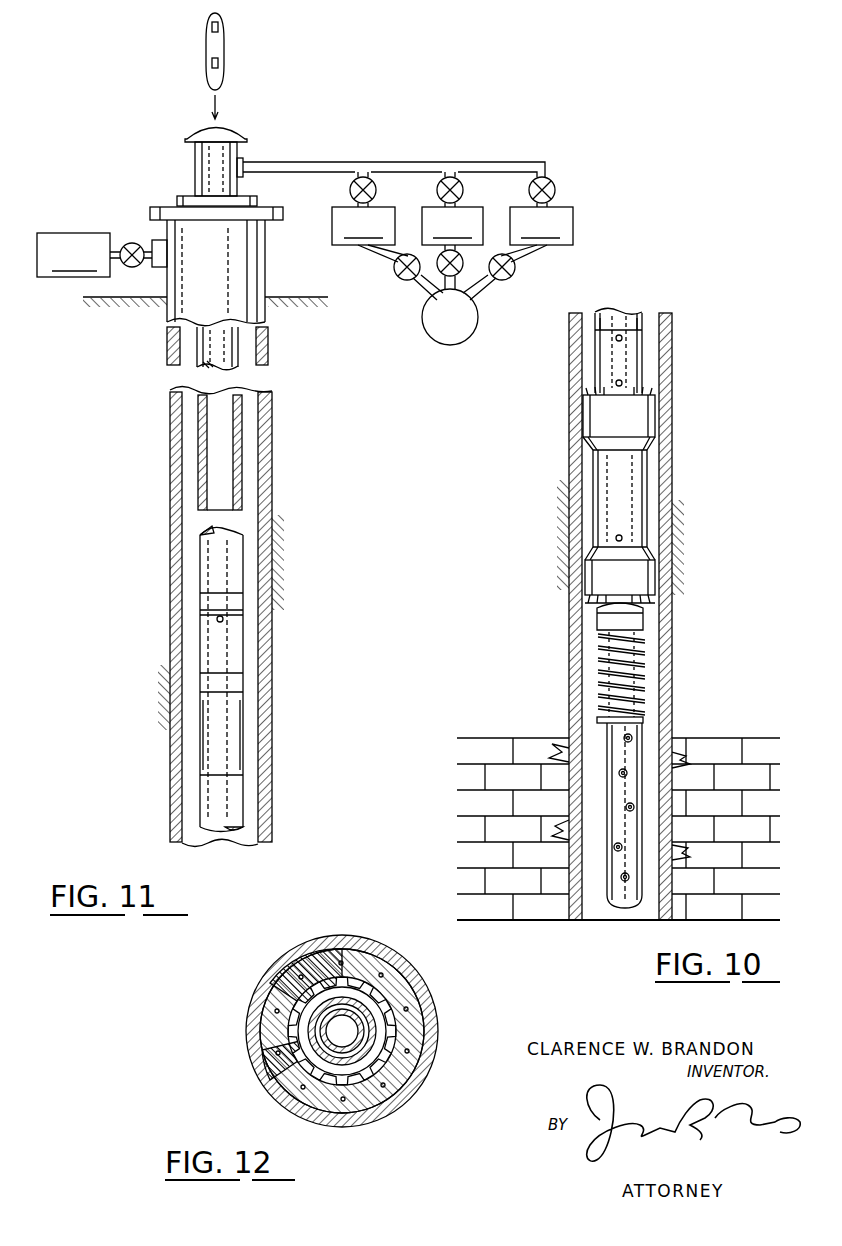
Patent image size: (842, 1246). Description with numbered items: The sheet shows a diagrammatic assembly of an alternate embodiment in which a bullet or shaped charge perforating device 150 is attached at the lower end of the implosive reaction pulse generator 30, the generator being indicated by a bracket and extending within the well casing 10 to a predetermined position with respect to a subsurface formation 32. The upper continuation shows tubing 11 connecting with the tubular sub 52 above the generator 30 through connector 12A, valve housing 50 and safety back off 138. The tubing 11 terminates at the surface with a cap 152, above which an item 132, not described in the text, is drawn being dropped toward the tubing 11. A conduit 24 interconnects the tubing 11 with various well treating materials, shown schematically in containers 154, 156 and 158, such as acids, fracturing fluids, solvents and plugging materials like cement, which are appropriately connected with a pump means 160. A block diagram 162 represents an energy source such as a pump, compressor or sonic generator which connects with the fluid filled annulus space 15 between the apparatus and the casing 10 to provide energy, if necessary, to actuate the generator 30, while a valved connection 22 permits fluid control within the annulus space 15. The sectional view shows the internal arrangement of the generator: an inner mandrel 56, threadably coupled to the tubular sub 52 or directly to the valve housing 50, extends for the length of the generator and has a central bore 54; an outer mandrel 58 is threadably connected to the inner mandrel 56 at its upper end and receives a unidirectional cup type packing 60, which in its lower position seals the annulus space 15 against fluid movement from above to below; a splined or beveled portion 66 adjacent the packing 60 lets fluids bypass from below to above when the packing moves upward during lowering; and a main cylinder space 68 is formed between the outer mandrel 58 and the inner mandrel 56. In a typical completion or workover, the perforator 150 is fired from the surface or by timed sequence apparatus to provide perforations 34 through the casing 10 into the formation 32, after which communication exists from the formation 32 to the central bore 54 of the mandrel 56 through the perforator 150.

In FIG. 11, the well casing 10 is at (253, 275).
In FIG. 12, the well casing 10 is at (410, 969).
In FIG. 11, the tubing 11 is at (213, 163).
In FIG. 11, the connector 12A is at (215, 604).
In FIG. 11, the annulus space 15 is at (248, 491).
In FIG. 11, the valved connection 22 is at (131, 244).
In FIG. 11, the conduit 24 is at (372, 171).
In FIG. 10, the implosive reaction pulse generator 30 is at (736, 680).
In FIG. 10, the subsurface formation 32 is at (707, 805).
In FIG. 10, the perforations 34 is at (672, 758).
In FIG. 11, the valve housing 50 is at (217, 649).
In FIG. 10, the tubular sub 52 is at (630, 319).
In FIG. 11, the tubular sub 52 is at (222, 808).
In FIG. 12, the central bore 54 is at (342, 1031).
In FIG. 12, the inner mandrel 56 is at (272, 988).
In FIG. 12, the outer mandrel 58 is at (283, 1071).
In FIG. 12, the unidirectional packing 60 is at (415, 1011).
In FIG. 12, the splined or beveled portion 66 is at (420, 1041).
In FIG. 12, the main cylinder space 68 is at (310, 1041).
In FIG. 11, the dropped plug 132 is at (193, 56).
In FIG. 11, the safety back off 138 is at (222, 751).
In FIG. 10, the perforating device 150 is at (613, 746).
In FIG. 11, the cap 152 is at (232, 137).
In FIG. 11, the container 154 is at (387, 238).
In FIG. 11, the container 156 is at (452, 233).
In FIG. 11, the container 158 is at (518, 238).
In FIG. 11, the pump means 160 is at (467, 326).
In FIG. 11, the energy source 162 is at (102, 255).